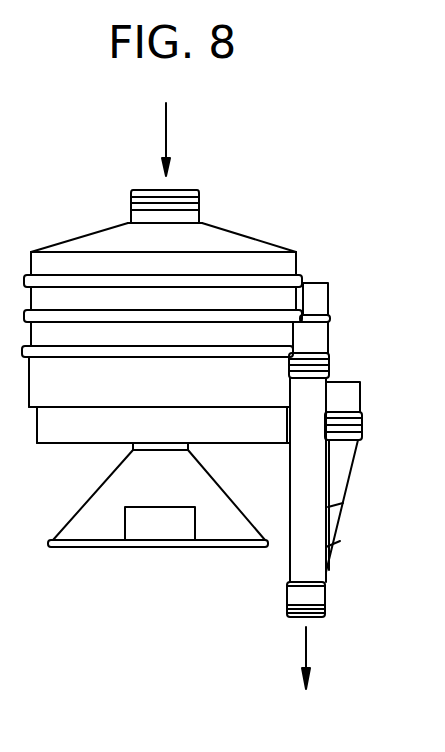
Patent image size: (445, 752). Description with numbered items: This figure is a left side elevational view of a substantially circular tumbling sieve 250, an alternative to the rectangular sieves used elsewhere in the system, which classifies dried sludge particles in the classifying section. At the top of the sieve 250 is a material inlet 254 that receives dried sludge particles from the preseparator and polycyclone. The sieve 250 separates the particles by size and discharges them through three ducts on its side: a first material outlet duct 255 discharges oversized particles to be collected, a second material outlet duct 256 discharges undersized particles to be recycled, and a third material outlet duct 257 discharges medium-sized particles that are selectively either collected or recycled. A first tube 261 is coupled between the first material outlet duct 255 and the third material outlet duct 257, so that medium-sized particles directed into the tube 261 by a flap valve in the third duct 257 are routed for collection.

The sieve 250 is at (74, 198).
The material inlet 254 is at (197, 192).
The first material outlet duct 255 is at (330, 343).
The second material outlet duct 256 is at (328, 293).
The third material outlet duct 257 is at (360, 393).
The first tube 261 is at (340, 523).